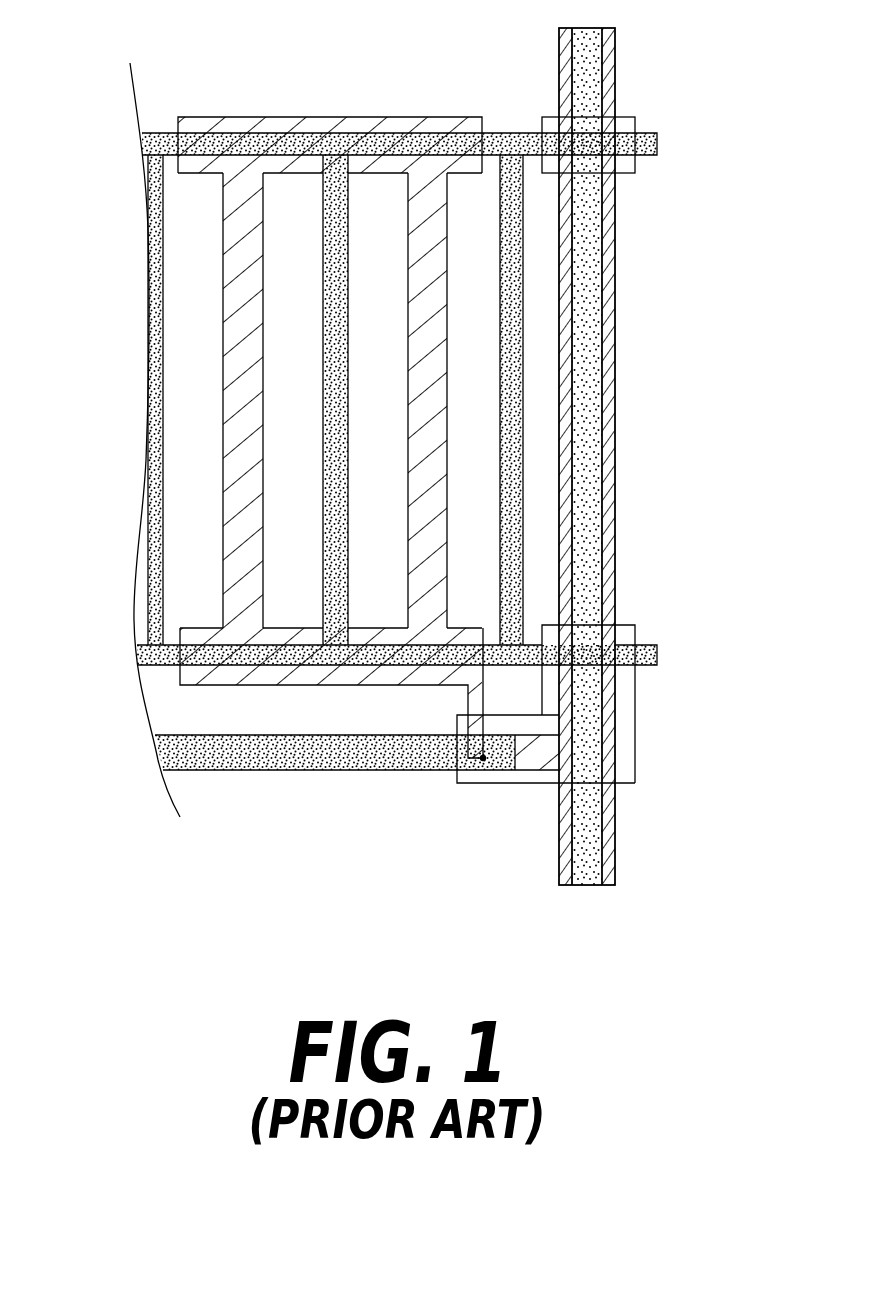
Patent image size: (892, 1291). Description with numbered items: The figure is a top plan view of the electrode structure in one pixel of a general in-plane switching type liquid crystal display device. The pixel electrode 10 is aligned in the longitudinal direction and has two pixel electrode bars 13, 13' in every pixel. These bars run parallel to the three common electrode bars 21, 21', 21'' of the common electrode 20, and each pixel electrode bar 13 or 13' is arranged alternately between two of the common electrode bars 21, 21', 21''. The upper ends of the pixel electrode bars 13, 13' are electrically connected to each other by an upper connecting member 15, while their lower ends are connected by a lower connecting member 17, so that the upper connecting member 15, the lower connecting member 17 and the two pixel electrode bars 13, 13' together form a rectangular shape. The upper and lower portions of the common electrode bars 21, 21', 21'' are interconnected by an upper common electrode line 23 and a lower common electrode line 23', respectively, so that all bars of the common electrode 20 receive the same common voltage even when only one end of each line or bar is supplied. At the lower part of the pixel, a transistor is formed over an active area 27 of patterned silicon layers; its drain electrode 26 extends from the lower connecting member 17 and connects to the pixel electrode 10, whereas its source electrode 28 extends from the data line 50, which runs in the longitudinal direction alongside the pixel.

The pixel electrode 10 is at (432, 117).
The pixel electrode bar 13 is at (152, 400).
The pixel electrode bar 13' is at (399, 400).
The upper connecting member 15 is at (338, 118).
The lower connecting member 17 is at (293, 686).
The common electrode 20 is at (743, 113).
The common electrode bar 21 is at (184, 400).
The common electrode bar 21' is at (367, 400).
The common electrode bar 21'' is at (610, 400).
The upper common electrode line 23 is at (647, 145).
The lower common electrode line 23' is at (636, 704).
The drain electrode 26 is at (482, 761).
The active area 27 is at (635, 722).
The source electrode 28 is at (533, 765).
The data line 50 is at (612, 52).